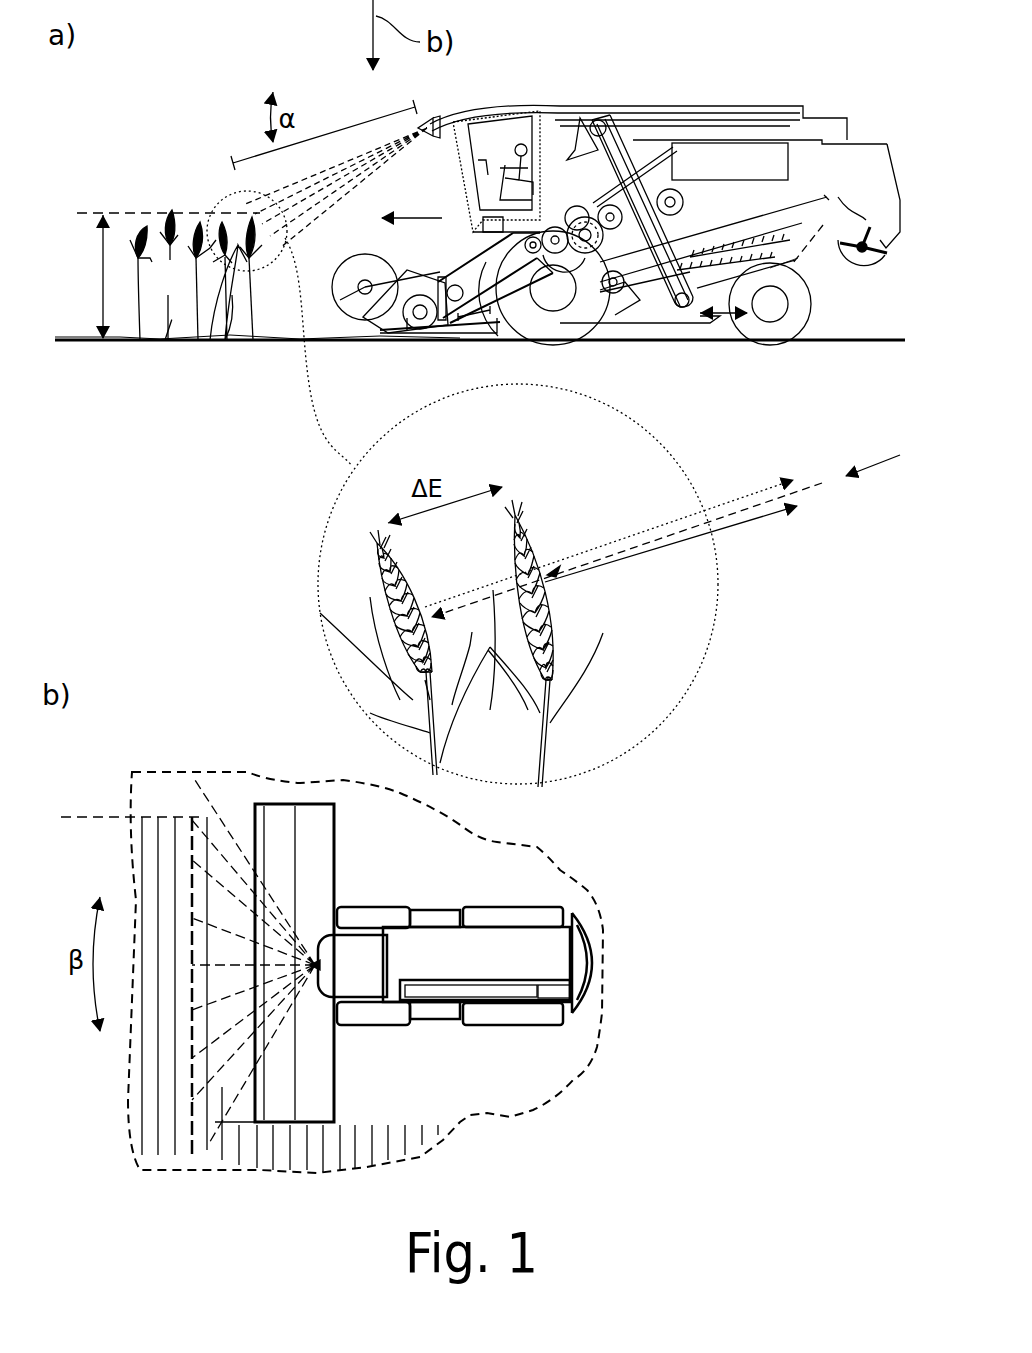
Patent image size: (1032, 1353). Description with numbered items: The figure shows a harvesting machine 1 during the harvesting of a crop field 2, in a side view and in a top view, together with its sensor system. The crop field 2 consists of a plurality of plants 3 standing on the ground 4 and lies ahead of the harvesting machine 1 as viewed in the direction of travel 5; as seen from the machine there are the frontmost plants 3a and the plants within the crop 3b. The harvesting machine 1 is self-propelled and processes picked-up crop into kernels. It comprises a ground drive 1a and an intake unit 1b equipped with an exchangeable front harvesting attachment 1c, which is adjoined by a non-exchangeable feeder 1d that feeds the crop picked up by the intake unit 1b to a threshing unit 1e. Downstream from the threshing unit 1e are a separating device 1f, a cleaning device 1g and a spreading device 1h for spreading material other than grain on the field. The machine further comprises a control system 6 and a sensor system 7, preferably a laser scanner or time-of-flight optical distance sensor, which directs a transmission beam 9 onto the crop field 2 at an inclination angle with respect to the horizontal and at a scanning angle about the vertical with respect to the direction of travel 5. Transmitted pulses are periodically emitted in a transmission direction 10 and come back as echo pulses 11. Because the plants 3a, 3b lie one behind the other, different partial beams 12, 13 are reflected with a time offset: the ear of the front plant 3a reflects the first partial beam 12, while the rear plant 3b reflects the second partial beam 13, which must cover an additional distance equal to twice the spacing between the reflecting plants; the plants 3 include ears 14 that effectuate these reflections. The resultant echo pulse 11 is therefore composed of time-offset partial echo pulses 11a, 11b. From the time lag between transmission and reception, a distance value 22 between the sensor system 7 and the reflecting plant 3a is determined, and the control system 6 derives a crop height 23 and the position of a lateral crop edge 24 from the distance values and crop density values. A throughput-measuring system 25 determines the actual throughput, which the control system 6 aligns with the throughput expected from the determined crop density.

The harvesting machine 1 is at (609, 530).
The ground drive 1a is at (588, 311).
The intake unit 1b is at (413, 314).
The front harvesting attachment 1c is at (357, 248).
The feeder 1d is at (516, 287).
The threshing unit 1e is at (565, 203).
The separating device 1f is at (738, 187).
The cleaning device 1g is at (803, 259).
The spreading device 1h is at (861, 218).
The crop field 2 is at (214, 629).
The plants 3 is at (153, 180).
The frontmost plants 3a is at (250, 295).
The plants within the crop 3b is at (222, 316).
The ground 4 is at (152, 341).
The direction of travel 5 is at (413, 214).
The control system 6 is at (493, 278).
The sensor system 7 is at (339, 599).
The transmission beam 9 is at (222, 850).
The transmission direction 10 is at (865, 460).
The echo pulses 11 is at (629, 515).
The partial echo pulse 11a is at (735, 527).
The partial echo pulse 11b is at (715, 503).
The first partial beam 12 is at (805, 487).
The second partial beam 13 is at (461, 682).
The ears 14 is at (400, 567).
The distance value 22 is at (343, 130).
The crop height 23 is at (101, 257).
The lateral crop edge 24 is at (152, 817).
The throughput-measuring system 25 is at (482, 300).